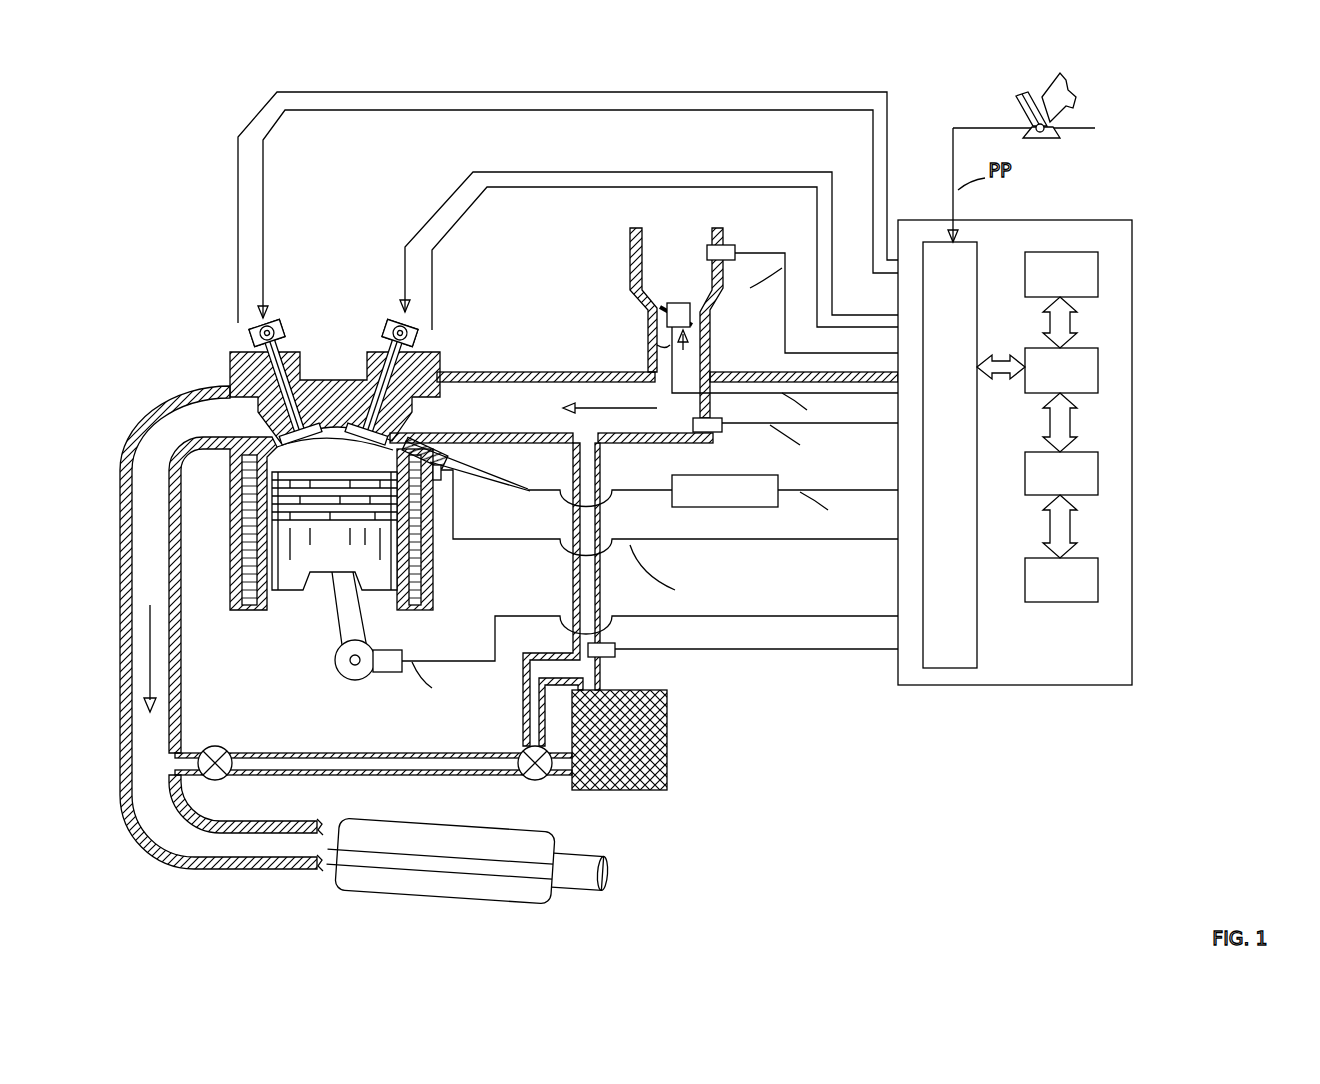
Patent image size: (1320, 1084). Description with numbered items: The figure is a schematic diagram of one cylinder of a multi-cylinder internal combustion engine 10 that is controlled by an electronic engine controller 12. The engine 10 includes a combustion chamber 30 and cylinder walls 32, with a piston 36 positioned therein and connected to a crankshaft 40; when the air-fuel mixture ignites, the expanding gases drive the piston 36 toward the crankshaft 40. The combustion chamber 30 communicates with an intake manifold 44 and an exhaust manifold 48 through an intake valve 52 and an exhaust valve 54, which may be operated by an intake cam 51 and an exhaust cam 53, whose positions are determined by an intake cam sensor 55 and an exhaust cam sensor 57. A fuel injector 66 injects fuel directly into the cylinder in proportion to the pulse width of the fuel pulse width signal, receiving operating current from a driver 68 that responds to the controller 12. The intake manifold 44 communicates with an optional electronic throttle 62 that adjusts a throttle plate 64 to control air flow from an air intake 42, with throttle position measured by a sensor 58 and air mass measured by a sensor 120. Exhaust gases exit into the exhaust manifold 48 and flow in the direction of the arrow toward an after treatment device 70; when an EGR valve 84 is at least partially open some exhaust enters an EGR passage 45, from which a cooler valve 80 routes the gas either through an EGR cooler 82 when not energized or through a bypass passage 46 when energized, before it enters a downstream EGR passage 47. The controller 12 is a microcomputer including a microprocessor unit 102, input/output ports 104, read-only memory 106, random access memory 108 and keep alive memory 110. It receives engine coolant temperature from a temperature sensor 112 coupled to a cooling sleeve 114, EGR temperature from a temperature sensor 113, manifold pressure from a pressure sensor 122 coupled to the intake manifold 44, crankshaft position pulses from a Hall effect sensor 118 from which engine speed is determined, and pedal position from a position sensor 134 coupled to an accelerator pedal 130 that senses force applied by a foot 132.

The internal combustion engine 10 is at (160, 300).
The electronic engine controller 12 is at (1060, 435).
The combustion chamber 30 is at (332, 453).
The cylinder walls 32 is at (275, 592).
The piston 36 is at (317, 555).
The crankshaft 40 is at (338, 673).
The air intake 42 is at (667, 279).
The intake manifold 44 is at (520, 418).
The EGR passage 45 is at (255, 775).
The bypass passage 46 is at (522, 712).
The downstream EGR passage 47 is at (573, 560).
The exhaust manifold 48 is at (186, 426).
The intake cam 51 is at (392, 318).
The intake valve 52 is at (400, 428).
The exhaust cam 53 is at (272, 318).
The exhaust valve 54 is at (255, 395).
The intake cam sensor 55 is at (415, 335).
The exhaust cam sensor 57 is at (250, 328).
The throttle position sensor 58 is at (655, 345).
The electronic throttle 62 is at (695, 318).
The throttle plate 64 is at (667, 312).
The fuel injector 66 is at (447, 465).
The driver 68 is at (703, 508).
The after treatment device 70 is at (337, 895).
The cooler valve 80 is at (525, 778).
The EGR cooler 82 is at (670, 790).
The EGR valve 84 is at (215, 748).
The microprocessor unit 102 is at (1098, 370).
The input/output ports 104 is at (977, 260).
The read-only memory 106 is at (1098, 272).
The random access memory 108 is at (1098, 475).
The keep alive memory 110 is at (1098, 580).
The temperature sensor 112 is at (448, 487).
The temperature sensor 113 is at (618, 655).
The cooling sleeve 114 is at (425, 580).
The Hall effect sensor 118 is at (385, 675).
The air mass sensor 120 is at (728, 248).
The pressure sensor 122 is at (712, 432).
The accelerator pedal 130 is at (1022, 100).
The foot 132 is at (1076, 97).
The position sensor 134 is at (1095, 128).